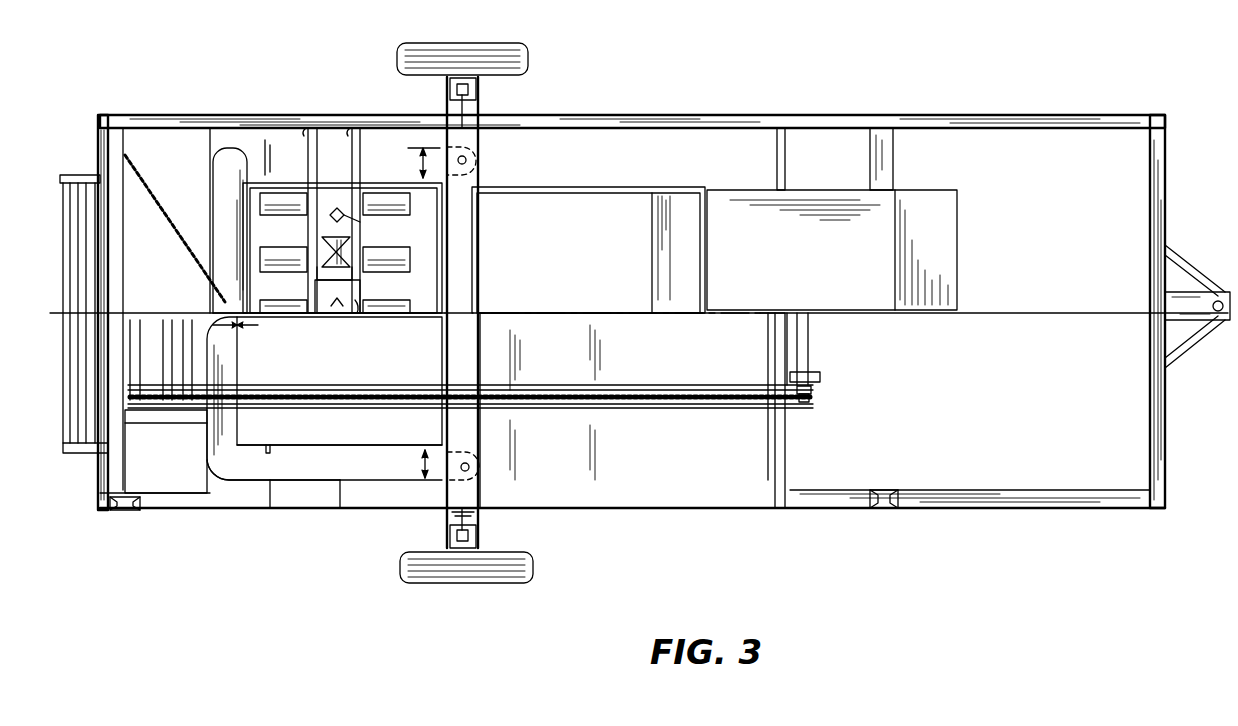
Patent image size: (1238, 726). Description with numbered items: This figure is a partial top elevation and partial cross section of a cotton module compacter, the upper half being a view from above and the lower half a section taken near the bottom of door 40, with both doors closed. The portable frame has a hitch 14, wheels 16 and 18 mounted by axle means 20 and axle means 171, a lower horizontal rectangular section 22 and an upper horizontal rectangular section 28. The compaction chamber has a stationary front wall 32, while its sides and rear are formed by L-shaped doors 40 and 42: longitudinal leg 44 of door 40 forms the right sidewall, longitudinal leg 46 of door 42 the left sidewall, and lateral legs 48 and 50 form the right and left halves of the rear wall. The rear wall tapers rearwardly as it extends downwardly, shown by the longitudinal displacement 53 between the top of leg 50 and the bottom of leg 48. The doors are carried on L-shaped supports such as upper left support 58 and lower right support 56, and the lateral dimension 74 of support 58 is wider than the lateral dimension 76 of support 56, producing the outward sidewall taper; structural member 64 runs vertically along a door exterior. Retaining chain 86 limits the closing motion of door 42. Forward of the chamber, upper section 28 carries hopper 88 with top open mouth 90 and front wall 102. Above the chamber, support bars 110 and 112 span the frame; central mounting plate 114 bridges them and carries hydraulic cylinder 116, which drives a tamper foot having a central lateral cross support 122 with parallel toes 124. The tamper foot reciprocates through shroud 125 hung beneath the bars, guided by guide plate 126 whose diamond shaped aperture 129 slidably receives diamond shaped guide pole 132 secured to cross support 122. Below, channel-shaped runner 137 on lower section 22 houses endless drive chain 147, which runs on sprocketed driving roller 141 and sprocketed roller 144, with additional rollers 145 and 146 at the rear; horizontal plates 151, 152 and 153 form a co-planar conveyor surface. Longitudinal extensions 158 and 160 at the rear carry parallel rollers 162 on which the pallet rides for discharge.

The hitch 14 is at (1200, 295).
The wheel 16 is at (508, 568).
The wheel 18 is at (498, 50).
The axle means 20 is at (476, 533).
The lower horizontal rectangular section 22 is at (1104, 115).
The upper horizontal rectangular section 28 is at (850, 115).
The stationary front wall 32 is at (440, 365).
The L-shaped door 40 is at (214, 466).
The L-shaped door 42 is at (240, 190).
The longitudinal leg 44 is at (345, 450).
The longitudinal leg 46 is at (300, 118).
The lateral leg 48 is at (243, 374).
The lateral leg 50 is at (243, 240).
The longitudinal displacement 53 is at (245, 330).
The L-shaped support 56 is at (296, 462).
The L-shaped support 58 is at (222, 160).
The structural member 64 is at (262, 460).
The lateral dimension 74 is at (418, 163).
The lateral dimension 76 is at (420, 466).
The retaining chain 86 is at (166, 212).
The hopper 88 is at (685, 265).
The top open mouth 90 is at (612, 185).
The front wall 102 is at (950, 240).
The support bar 110 is at (356, 128).
The support bar 112 is at (312, 128).
The central mounting plate 114 is at (358, 305).
The hydraulic cylinder 116 is at (336, 310).
The central lateral cross support 122 is at (325, 282).
The toes 124 is at (262, 213).
The shroud 125 is at (258, 185).
The guide plate 126 is at (322, 228).
The diamond shaped aperture 129 is at (352, 222).
The guide pole 132 is at (337, 208).
The channel-shaped runner 137 is at (762, 406).
The sprocketed driving roller 141 is at (808, 400).
The sprocketed roller 144 is at (140, 422).
The roller 145 is at (185, 335).
The roller 146 is at (136, 335).
The endless drive chain 147 is at (752, 388).
The horizontal plate 151 is at (700, 470).
The horizontal plate 152 is at (755, 150).
The horizontal plate 153 is at (790, 342).
The longitudinal extension 158 is at (80, 455).
The longitudinal extension 160 is at (90, 178).
The rollers 162 is at (90, 230).
The axle means 171 is at (470, 88).